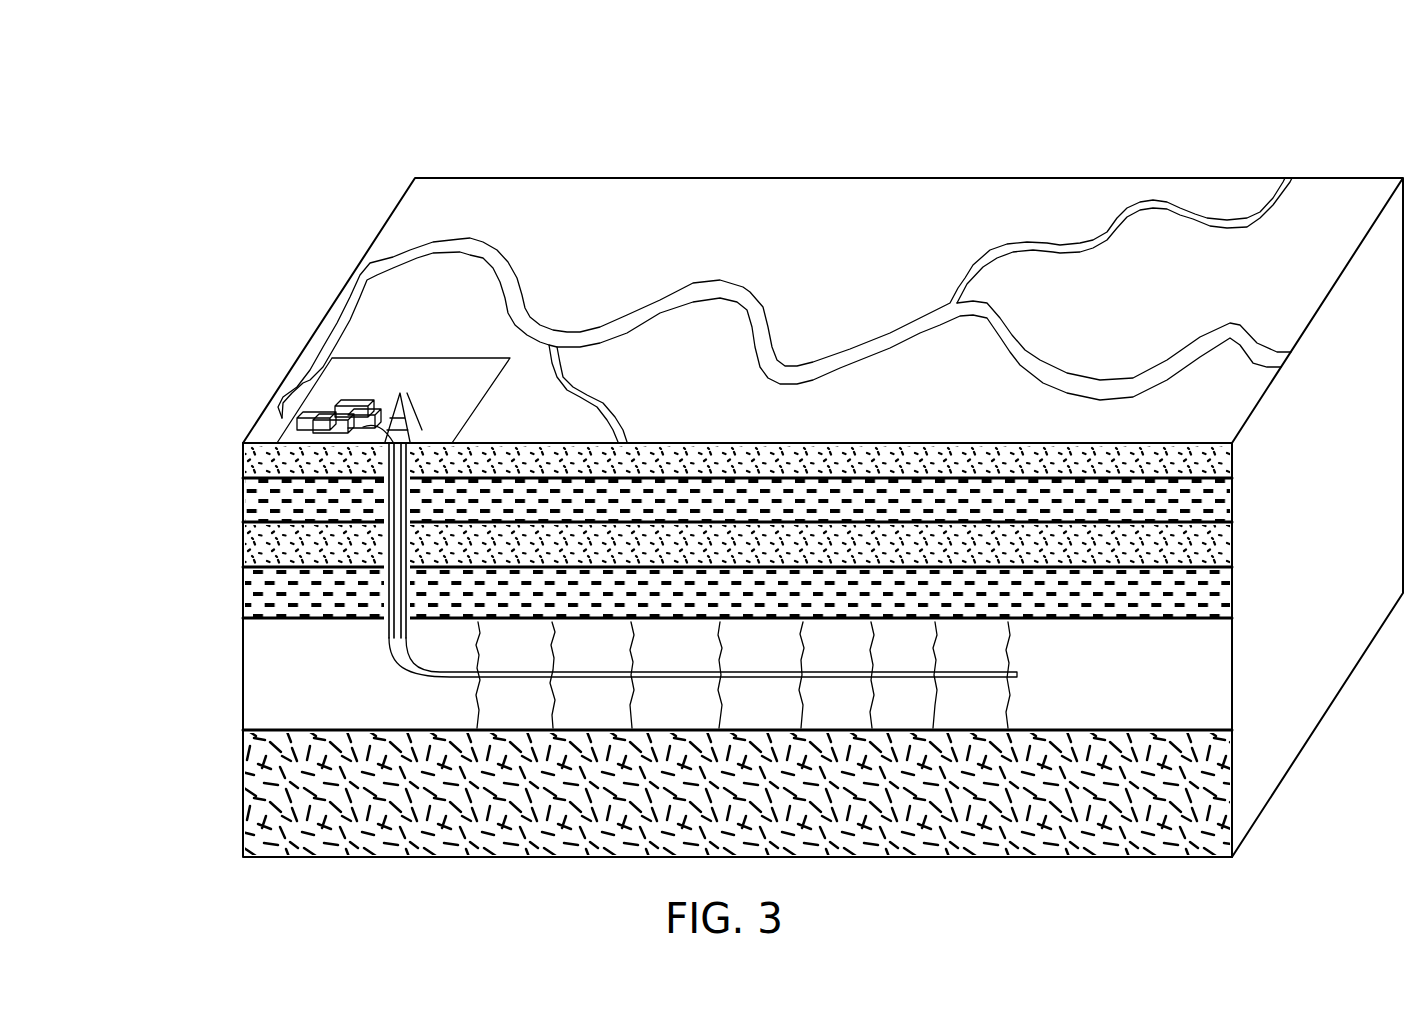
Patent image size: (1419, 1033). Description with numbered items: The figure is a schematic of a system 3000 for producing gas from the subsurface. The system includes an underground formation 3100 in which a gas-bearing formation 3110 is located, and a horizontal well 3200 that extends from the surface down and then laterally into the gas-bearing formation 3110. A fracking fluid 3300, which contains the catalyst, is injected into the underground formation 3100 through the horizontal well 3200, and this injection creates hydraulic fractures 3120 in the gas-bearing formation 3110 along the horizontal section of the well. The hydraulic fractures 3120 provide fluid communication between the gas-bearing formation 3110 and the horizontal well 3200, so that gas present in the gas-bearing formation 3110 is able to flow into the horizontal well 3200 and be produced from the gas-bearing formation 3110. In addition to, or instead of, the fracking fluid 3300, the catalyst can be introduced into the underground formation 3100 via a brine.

The system 3000 is at (726, 444).
The underground formation 3100 is at (636, 648).
The gas-bearing formation 3110 is at (243, 665).
The hydraulic fractures 3120 is at (1010, 642).
The horizontal well 3200 is at (403, 663).
The fracking fluid 3300 is at (343, 397).